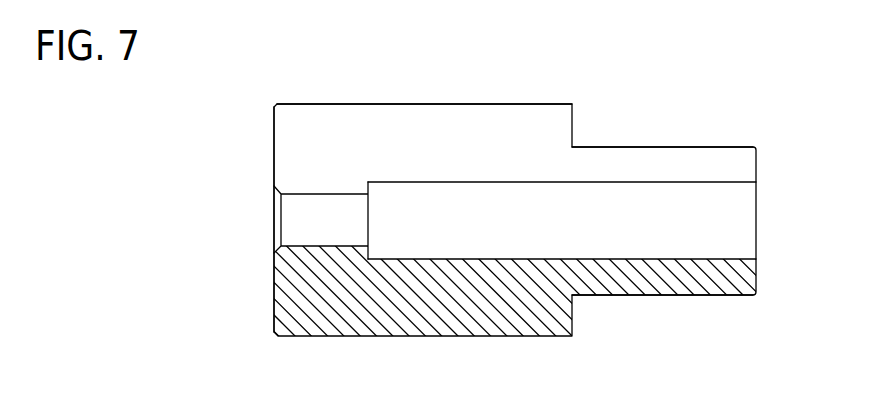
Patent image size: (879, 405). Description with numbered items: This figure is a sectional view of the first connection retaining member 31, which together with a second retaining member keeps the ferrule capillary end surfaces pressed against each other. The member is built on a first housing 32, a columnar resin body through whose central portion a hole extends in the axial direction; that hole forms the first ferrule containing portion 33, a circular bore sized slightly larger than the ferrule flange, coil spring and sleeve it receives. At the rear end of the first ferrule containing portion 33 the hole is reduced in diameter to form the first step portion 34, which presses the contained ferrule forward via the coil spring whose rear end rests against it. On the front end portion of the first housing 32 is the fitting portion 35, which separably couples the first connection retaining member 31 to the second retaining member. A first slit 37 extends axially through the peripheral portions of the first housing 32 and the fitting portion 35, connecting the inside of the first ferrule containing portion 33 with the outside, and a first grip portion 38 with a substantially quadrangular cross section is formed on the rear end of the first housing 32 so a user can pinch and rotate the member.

The first connection retaining member 31 is at (305, 58).
The first housing 32 is at (448, 318).
The first ferrule containing portion 33 is at (547, 255).
The first step portion 34 is at (369, 248).
The fitting portion 35 is at (668, 282).
The first slit 37 is at (446, 127).
The first grip portion 38 is at (313, 337).